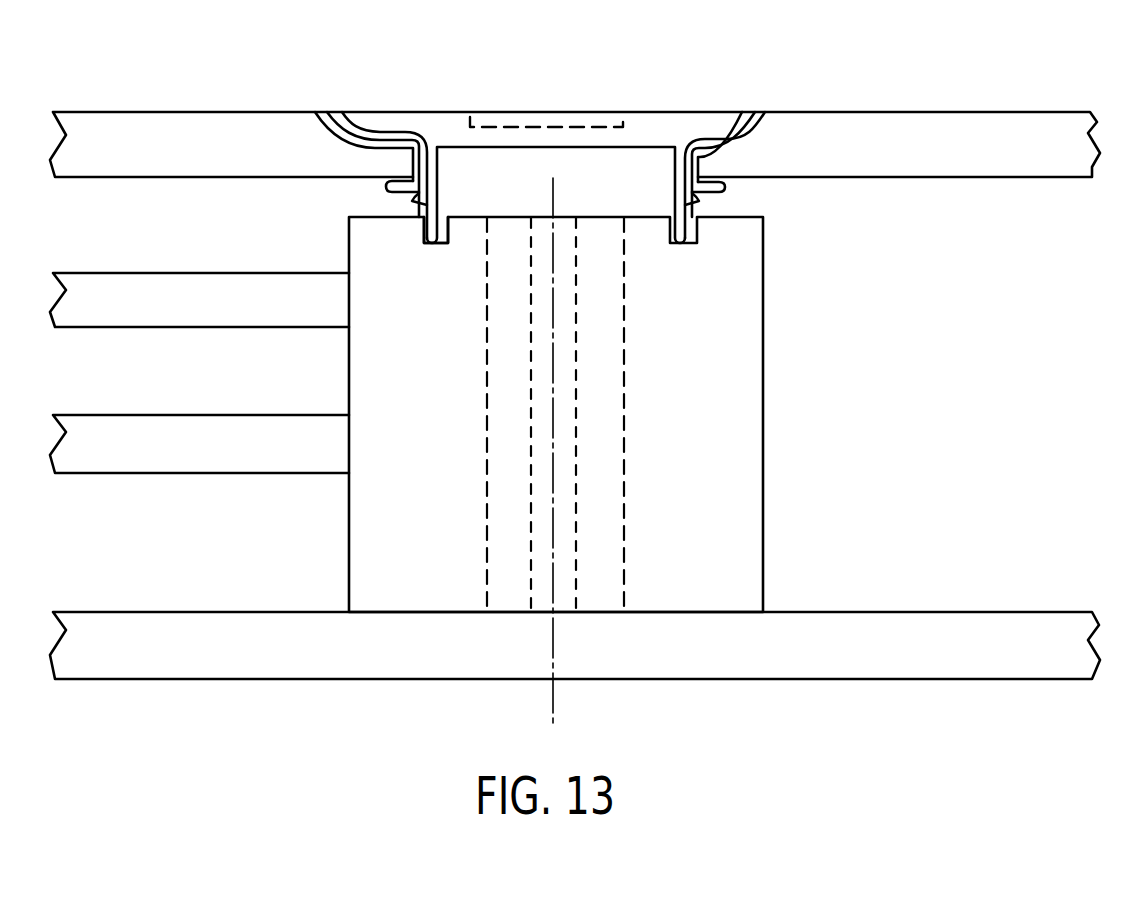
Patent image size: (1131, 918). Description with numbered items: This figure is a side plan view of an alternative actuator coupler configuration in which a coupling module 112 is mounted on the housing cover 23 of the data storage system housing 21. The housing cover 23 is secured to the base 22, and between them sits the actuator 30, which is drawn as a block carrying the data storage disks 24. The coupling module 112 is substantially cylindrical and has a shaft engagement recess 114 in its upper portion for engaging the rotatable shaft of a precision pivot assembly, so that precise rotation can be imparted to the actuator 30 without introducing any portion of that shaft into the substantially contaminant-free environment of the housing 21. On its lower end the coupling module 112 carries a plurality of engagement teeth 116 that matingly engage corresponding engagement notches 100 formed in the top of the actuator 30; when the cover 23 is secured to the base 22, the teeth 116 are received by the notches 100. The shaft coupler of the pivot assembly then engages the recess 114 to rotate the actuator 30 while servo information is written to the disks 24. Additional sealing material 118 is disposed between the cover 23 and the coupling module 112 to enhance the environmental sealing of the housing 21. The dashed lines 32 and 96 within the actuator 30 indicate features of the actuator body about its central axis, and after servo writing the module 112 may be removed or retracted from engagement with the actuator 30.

The data storage system housing 21 is at (1089, 90).
The base 22 is at (937, 662).
The housing cover 23 is at (108, 123).
The data storage disks 24 is at (148, 311).
The actuator 30 is at (753, 363).
The inner bore 32 is at (577, 507).
The outer bore 96 is at (485, 558).
The engagement notches 100 is at (438, 245).
The coupling module 112 is at (689, 112).
The shaft engagement recess 114 is at (520, 115).
The engagement teeth 116 is at (438, 216).
The sealing material 118 is at (333, 125).